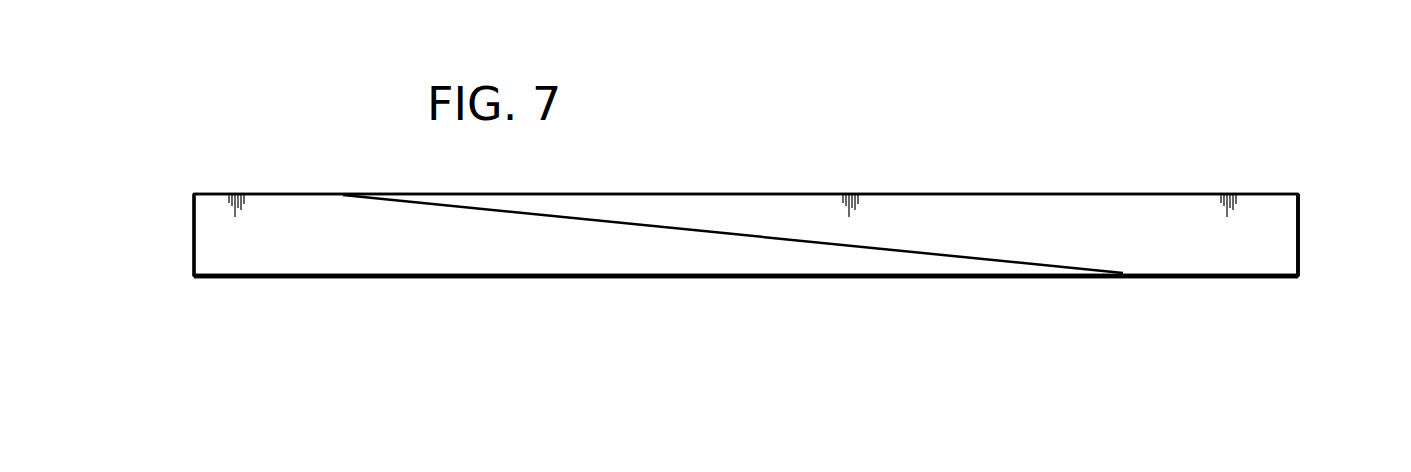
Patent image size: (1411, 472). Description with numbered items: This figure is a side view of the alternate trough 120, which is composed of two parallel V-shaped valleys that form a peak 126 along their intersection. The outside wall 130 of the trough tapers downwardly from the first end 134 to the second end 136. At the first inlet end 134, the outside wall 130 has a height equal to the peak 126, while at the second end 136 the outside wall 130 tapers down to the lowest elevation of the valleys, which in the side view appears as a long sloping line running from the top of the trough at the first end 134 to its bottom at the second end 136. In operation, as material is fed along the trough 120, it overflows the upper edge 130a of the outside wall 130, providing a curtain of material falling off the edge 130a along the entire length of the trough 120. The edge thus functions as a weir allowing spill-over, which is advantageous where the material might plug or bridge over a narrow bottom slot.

The alternate trough 120 is at (742, 171).
The peak 126 is at (1060, 193).
The outside wall 130 is at (680, 268).
The upper edge 130a is at (862, 244).
The first end 134 is at (194, 233).
The second end 136 is at (1298, 239).